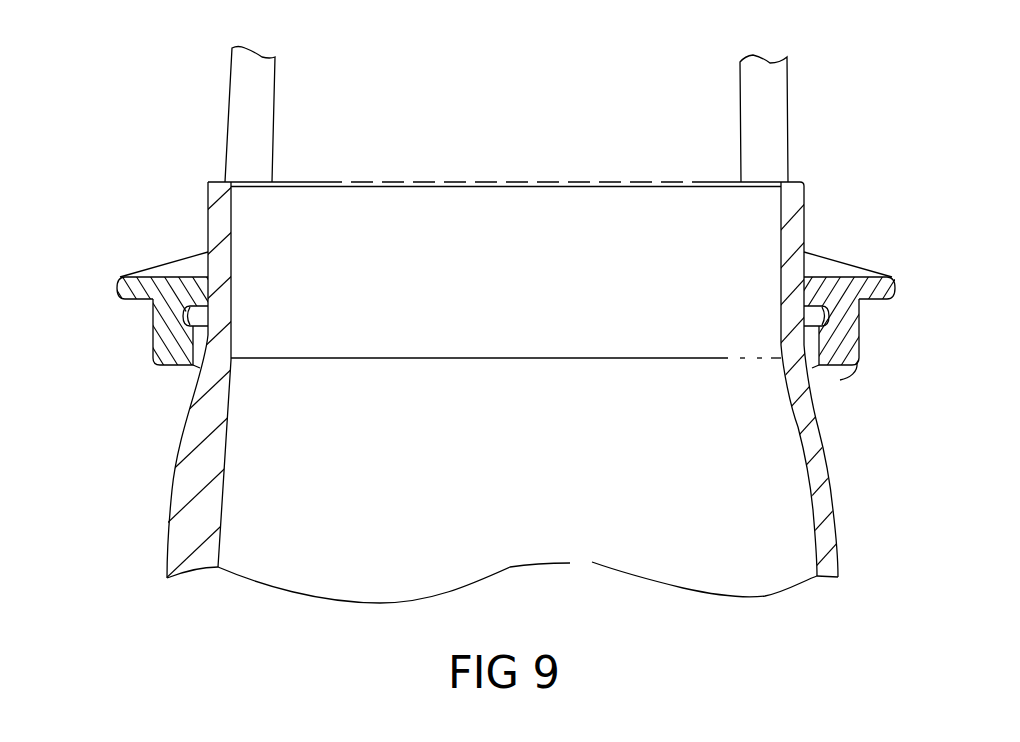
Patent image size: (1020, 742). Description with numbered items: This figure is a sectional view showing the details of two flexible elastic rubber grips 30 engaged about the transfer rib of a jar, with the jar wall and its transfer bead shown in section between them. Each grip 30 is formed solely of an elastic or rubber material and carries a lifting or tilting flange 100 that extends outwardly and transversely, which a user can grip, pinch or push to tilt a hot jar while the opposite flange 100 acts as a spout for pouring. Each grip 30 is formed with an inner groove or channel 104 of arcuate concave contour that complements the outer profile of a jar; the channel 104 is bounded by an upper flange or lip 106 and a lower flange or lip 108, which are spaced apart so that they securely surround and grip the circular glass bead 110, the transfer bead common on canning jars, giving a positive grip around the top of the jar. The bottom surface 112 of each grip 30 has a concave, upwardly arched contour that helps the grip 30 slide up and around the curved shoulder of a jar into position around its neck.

The flexible rubber grip 30 is at (153, 326).
The lifting or tilting flange 100 is at (118, 287).
The inner groove or channel 104 is at (206, 306).
The upper flange or lip 106 is at (205, 272).
The lower flange or lip 108 is at (198, 372).
The circular glass bead 110 is at (200, 320).
The bottom surface 112 is at (848, 380).